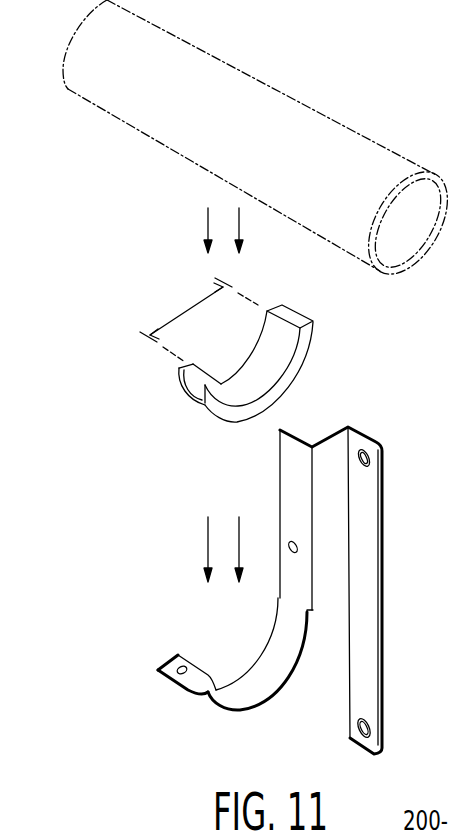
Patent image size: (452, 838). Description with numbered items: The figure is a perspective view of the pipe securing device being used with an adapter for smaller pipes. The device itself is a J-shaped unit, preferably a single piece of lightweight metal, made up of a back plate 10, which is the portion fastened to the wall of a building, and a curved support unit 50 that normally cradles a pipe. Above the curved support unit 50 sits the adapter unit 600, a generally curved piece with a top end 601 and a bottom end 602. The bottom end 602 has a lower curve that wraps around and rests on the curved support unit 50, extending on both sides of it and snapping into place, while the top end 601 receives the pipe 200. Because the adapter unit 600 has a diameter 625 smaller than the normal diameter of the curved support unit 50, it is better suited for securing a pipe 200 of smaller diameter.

The pipe 200 is at (340, 122).
The adapter unit 600 is at (245, 375).
The top end 601 is at (186, 364).
The bottom end 602 is at (287, 382).
The diameter 625 is at (188, 309).
The back plate 10 is at (301, 590).
The curved support unit 50 is at (265, 682).